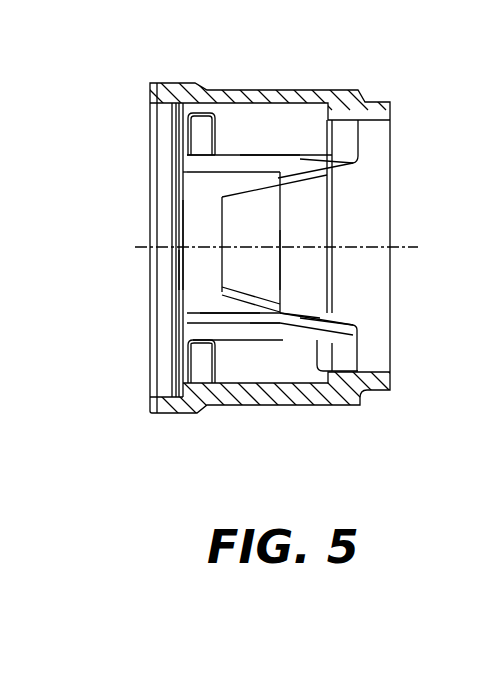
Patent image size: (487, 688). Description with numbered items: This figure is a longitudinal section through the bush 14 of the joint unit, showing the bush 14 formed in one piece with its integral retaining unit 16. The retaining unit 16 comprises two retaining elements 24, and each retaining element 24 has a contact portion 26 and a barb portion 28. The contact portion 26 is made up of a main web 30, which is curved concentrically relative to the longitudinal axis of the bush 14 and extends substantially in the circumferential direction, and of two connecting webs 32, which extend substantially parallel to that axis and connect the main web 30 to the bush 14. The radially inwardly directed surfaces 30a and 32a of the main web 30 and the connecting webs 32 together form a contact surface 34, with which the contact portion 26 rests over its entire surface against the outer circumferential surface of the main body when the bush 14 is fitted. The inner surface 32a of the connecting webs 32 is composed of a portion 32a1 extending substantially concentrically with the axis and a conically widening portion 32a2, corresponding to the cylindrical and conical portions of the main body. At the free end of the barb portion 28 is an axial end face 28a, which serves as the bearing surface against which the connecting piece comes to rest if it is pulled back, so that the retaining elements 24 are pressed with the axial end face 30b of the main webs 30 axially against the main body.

The bush 14 is at (380, 392).
The retaining unit 16 is at (272, 330).
The retaining element 24 is at (200, 200).
The contact portion 26 is at (268, 162).
The barb portion 28 is at (330, 218).
The axial end face 28a is at (285, 266).
The main web 30 is at (207, 293).
The radially inwardly directed surface 30a is at (212, 233).
The axial end face 30b is at (182, 268).
The connecting web 32 is at (303, 162).
The inner surface 32a is at (338, 176).
The concentric portion 32a1 is at (242, 313).
The conically widening portion 32a2 is at (294, 314).
The contact surface 34 is at (203, 193).